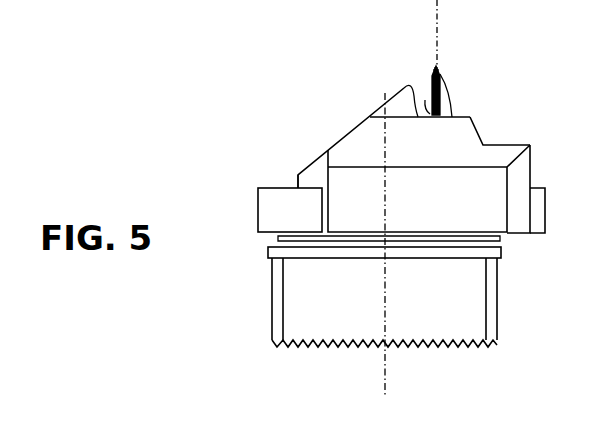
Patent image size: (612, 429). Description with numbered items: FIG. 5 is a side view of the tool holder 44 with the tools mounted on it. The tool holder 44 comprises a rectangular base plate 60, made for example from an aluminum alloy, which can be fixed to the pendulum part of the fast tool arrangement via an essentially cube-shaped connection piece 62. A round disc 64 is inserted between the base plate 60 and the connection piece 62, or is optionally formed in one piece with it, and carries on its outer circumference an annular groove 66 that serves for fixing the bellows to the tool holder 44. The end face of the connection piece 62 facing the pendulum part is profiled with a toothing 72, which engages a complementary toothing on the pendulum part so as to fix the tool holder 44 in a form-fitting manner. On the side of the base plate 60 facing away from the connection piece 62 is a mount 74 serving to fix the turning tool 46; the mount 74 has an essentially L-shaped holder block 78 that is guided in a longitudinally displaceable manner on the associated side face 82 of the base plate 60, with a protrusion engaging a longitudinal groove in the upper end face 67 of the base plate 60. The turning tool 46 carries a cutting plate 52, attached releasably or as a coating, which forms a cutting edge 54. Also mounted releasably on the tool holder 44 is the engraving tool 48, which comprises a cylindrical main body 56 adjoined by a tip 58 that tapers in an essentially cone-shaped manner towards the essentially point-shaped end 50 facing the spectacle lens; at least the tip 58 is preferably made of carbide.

The tool holder 44 is at (326, 138).
The turning tool 46 is at (398, 85).
The engraving tool 48 is at (448, 88).
The point-shaped end 50 is at (438, 63).
The cutting plate 52 is at (420, 137).
The cutting edge 54 is at (404, 88).
The cylindrical main body 56 is at (450, 106).
The tip 58 is at (435, 70).
The base plate 60 is at (302, 226).
The connection piece 62 is at (345, 309).
The round disc 64 is at (437, 258).
The annular groove 66 is at (278, 240).
The upper end face 67 is at (266, 187).
The toothing 72 is at (366, 345).
The mount 74 is at (532, 160).
The holder block 78 is at (482, 209).
The side face 82 is at (539, 203).